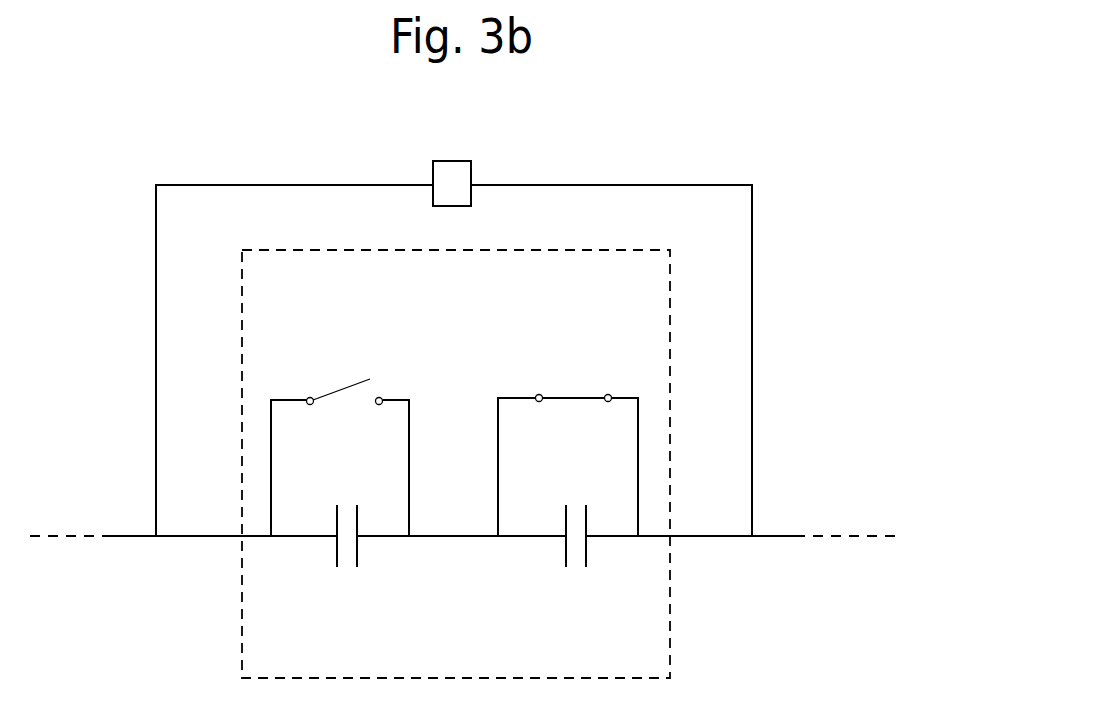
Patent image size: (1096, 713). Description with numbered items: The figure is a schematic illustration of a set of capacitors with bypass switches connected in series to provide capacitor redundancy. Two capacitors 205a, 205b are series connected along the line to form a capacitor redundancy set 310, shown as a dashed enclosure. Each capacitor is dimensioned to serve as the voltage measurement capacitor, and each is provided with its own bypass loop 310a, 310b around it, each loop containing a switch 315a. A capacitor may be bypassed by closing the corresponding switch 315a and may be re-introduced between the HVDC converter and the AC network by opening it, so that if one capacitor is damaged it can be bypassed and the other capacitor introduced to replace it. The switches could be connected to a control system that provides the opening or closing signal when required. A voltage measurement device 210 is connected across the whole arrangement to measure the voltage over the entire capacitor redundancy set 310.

The voltage measurement device 210 is at (450, 161).
The capacitor redundancy set 310 is at (672, 654).
The bypass loop 310a is at (432, 382).
The bypass loop 310b is at (512, 398).
The switch 315a is at (338, 395).
The capacitor 205a is at (363, 548).
The capacitor 205b is at (592, 548).